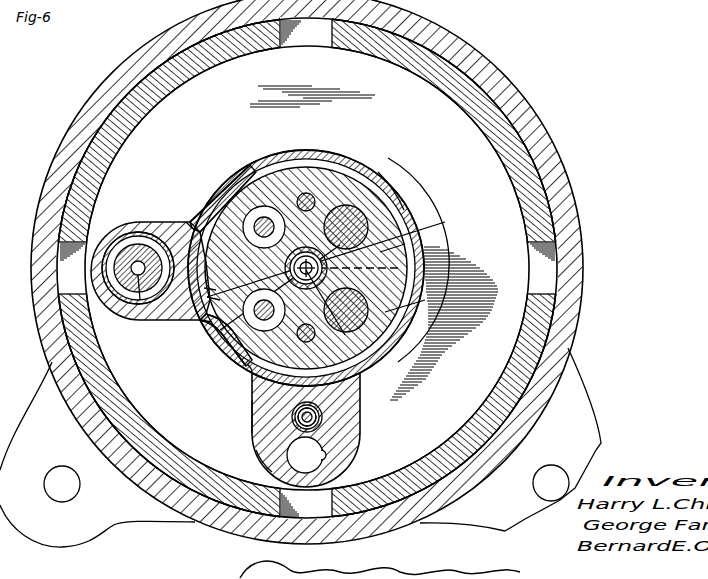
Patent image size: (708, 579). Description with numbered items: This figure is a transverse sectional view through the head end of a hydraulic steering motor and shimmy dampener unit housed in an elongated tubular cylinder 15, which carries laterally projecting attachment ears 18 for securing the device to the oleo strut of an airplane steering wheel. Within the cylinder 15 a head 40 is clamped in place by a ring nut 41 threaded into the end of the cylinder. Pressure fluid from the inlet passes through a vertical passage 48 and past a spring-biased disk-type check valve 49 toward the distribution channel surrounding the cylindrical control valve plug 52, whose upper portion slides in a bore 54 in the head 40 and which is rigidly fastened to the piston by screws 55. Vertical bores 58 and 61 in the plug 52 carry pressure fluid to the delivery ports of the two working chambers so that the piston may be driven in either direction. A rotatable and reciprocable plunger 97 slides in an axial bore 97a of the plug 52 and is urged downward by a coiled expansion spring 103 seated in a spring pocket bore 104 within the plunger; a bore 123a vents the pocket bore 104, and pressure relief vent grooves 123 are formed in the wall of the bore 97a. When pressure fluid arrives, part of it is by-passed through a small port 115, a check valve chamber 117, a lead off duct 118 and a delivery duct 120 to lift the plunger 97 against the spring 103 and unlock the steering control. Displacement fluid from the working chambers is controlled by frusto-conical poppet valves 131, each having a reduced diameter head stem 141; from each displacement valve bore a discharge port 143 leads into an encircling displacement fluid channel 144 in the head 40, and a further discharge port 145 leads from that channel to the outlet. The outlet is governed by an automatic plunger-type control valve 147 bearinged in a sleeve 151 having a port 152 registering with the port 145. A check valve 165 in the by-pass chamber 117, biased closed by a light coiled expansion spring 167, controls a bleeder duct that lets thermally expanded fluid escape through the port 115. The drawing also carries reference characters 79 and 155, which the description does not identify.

The tubular cylinder 15 is at (578, 242).
The attachment ears 18 is at (590, 442).
The ring nut 41 is at (491, 104).
The head structure 40 is at (420, 229).
The vertical passage 48 is at (328, 462).
The check valve 49 is at (272, 474).
The control valve plug 52 is at (350, 207).
The bore 54 is at (368, 200).
The screws 55 is at (318, 152).
The vertical bore 58 is at (355, 215).
The vertical bore 61 is at (425, 300).
The plate rim 79 is at (380, 298).
The plunger 97 is at (352, 198).
The axial bore 97a is at (276, 188).
The coiled expansion spring 103 is at (405, 244).
The spring pocket bore 104 is at (345, 335).
The small port 115 is at (258, 450).
The check valve chamber 117 is at (330, 402).
The lead off duct 118 is at (268, 420).
The delivery duct 120 is at (398, 212).
The pressure relief vent grooves 123 is at (214, 292).
The vent bore 123a is at (214, 299).
The poppet valve 131 is at (218, 206).
The head stem 141 is at (262, 205).
The discharge port 143 is at (232, 192).
The displacement fluid channel 144 is at (214, 330).
The discharge port 145 is at (186, 234).
The automatic control valve 147 is at (131, 298).
The sleeve 151 is at (140, 234).
The port 152 is at (171, 266).
The boss passage 155 is at (152, 330).
The check valve 165 is at (325, 415).
The coiled expansion spring 167 is at (320, 424).